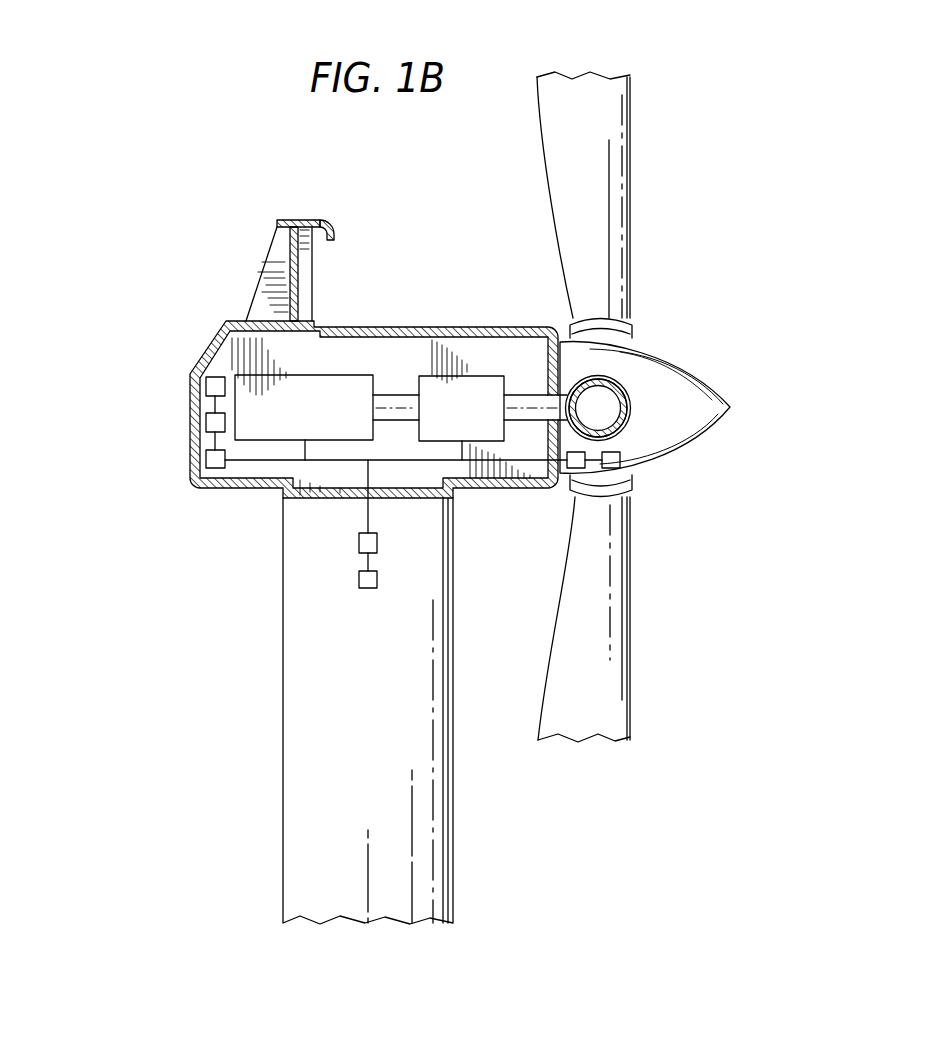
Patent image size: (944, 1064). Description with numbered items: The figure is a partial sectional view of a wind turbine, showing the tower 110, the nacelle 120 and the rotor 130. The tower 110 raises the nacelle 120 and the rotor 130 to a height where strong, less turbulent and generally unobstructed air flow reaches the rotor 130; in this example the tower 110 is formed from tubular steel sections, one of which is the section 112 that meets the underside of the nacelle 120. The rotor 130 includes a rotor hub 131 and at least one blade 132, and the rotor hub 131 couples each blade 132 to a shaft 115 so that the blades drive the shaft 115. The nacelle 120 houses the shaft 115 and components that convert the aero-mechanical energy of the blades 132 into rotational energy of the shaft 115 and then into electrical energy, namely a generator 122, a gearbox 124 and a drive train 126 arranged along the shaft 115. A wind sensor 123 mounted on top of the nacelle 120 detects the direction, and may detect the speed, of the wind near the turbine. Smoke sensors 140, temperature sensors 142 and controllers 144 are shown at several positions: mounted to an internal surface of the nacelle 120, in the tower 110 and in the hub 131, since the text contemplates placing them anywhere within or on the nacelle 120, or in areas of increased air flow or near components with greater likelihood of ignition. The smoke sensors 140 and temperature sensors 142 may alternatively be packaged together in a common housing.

The tower 110 is at (272, 733).
The tubular steel section 112 is at (283, 645).
The shaft 115 is at (526, 392).
The nacelle 120 is at (162, 331).
The generator 122 is at (340, 375).
The wind sensor 123 is at (291, 219).
The gearbox 124 is at (450, 376).
The drive train 126 is at (395, 395).
The rotor 130 is at (718, 450).
The rotor hub 131 is at (687, 365).
The blade 132 is at (630, 193).
The smoke sensor 140 is at (206, 387).
The temperature sensor 142 is at (206, 423).
The controller 144 is at (206, 461).